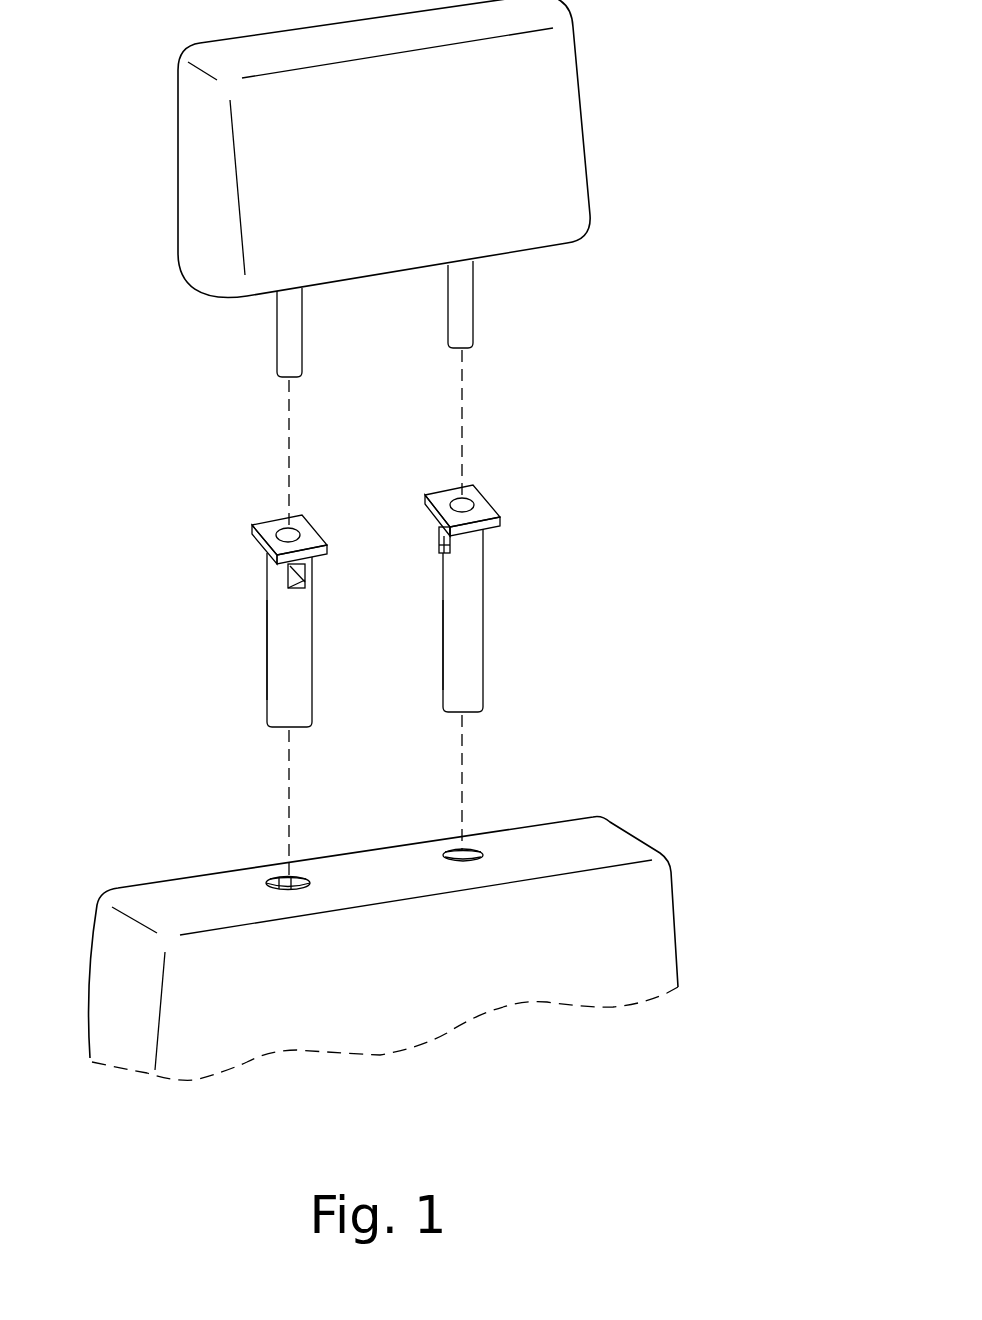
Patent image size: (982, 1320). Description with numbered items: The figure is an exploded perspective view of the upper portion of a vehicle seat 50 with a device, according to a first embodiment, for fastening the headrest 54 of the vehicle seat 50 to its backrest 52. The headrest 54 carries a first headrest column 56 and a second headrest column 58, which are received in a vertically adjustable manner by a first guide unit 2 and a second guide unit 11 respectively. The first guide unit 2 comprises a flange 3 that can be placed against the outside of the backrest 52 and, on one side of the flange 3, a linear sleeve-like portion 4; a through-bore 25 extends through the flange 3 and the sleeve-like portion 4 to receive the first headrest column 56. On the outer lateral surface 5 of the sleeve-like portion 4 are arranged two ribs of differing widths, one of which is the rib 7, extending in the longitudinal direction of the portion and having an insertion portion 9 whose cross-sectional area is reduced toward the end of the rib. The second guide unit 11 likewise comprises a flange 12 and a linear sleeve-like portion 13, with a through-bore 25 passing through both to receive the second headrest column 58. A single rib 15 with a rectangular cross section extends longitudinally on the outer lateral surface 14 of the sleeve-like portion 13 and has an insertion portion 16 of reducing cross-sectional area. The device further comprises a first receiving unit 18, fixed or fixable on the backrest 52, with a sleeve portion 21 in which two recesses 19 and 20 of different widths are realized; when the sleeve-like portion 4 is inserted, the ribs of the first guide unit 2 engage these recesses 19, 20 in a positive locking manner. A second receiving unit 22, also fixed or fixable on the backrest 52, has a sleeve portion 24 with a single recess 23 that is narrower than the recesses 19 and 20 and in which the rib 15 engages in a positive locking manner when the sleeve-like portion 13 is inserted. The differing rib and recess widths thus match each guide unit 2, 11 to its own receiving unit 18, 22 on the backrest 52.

The vehicle seat 50 is at (482, 192).
The headrest 54 is at (555, 178).
The first headrest column 56 is at (288, 333).
The second headrest column 58 is at (465, 313).
The first guide unit 2 is at (273, 607).
The flange 3 is at (255, 535).
The sleeve-like portion 4 is at (295, 680).
The outer lateral surface 5 is at (267, 665).
The rib 7 is at (305, 575).
The insertion portion 9 is at (308, 580).
The through-bore 25 is at (288, 535).
The second guide unit 11 is at (493, 587).
The flange 12 is at (493, 507).
The sleeve-like portion 13 is at (465, 682).
The outer lateral surface 14 is at (442, 628).
The rib 15 is at (440, 545).
The insertion portion 16 is at (440, 553).
The backrest 52 is at (433, 908).
The first receiving unit 18 is at (265, 877).
The recess 19 is at (282, 878).
The recess 20 is at (307, 883).
The sleeve portion 21 is at (300, 877).
The second receiving unit 22 is at (485, 842).
The recess 23 is at (443, 857).
The sleeve portion 24 is at (482, 857).